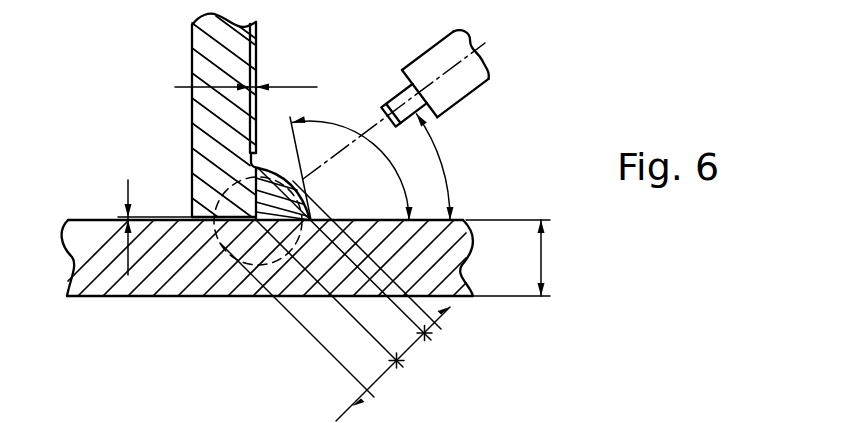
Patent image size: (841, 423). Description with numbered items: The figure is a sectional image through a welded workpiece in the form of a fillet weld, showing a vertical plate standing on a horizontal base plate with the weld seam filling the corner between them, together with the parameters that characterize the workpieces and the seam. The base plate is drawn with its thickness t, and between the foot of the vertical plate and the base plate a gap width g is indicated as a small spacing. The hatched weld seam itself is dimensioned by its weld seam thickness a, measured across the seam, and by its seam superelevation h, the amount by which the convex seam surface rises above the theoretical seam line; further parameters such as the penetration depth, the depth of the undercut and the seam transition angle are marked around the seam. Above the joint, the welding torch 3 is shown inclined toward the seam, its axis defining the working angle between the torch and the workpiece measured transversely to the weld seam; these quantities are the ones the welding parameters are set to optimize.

The welding torch 3 is at (462, 77).
The gap width between the workpieces g is at (147, 227).
The thickness of the workpieces t is at (508, 258).
The seam superelevation h is at (432, 330).
The weld seam thickness a is at (410, 350).